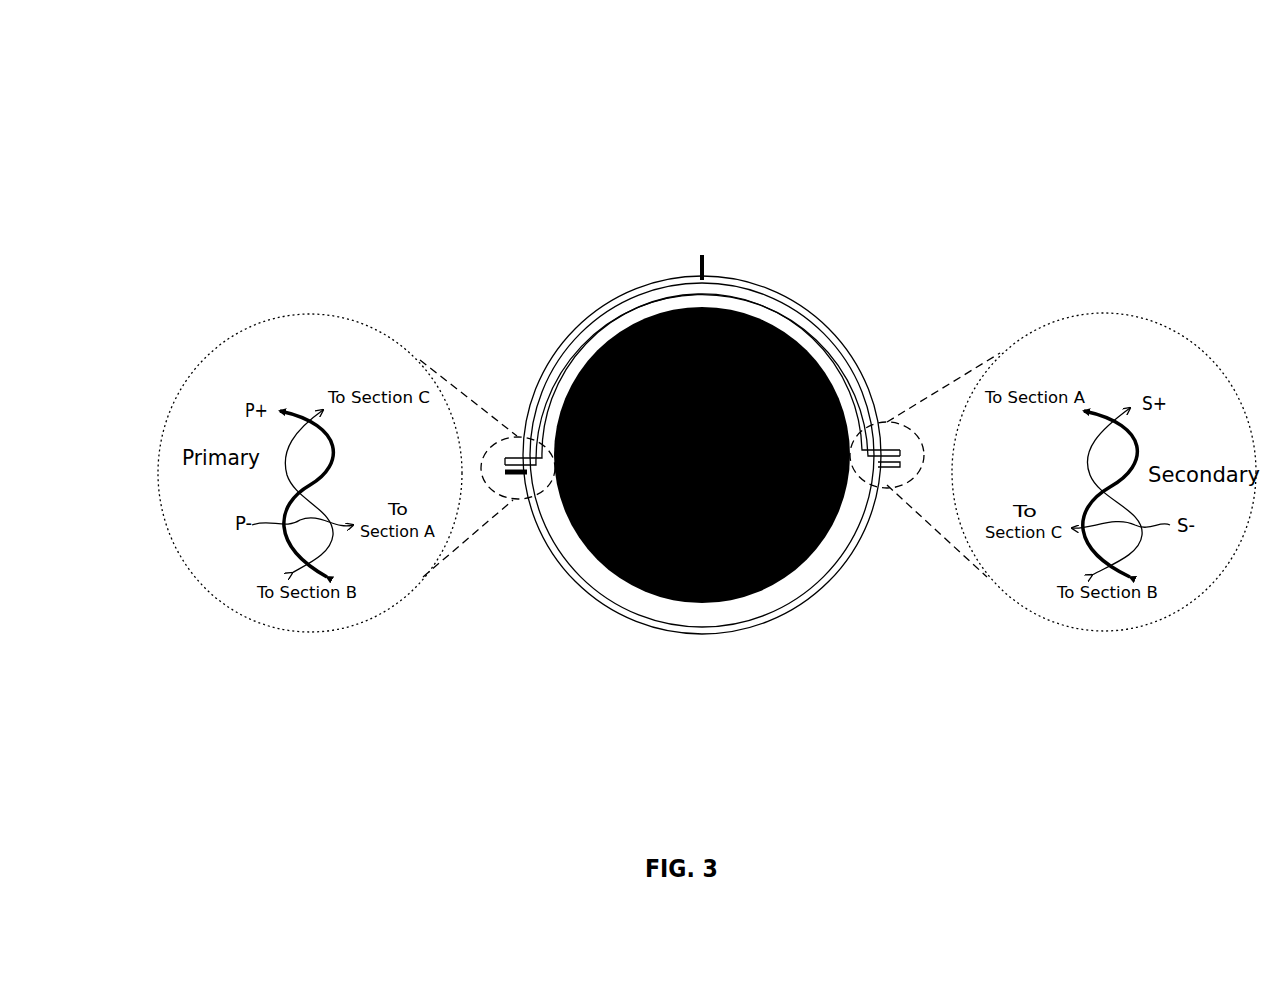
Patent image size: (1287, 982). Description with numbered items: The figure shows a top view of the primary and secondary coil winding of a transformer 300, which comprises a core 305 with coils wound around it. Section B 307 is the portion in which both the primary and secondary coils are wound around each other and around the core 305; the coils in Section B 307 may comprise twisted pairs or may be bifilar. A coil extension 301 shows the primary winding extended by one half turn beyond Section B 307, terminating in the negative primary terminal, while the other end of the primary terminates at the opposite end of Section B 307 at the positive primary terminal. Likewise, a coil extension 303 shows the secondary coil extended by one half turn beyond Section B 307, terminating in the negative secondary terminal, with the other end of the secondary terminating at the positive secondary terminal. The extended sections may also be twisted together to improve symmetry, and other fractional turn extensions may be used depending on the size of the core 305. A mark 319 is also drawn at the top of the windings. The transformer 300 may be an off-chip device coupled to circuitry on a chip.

The transformer 300 is at (221, 90).
The coil extension 301 is at (597, 321).
The coil extension 303 is at (788, 305).
The core 305 is at (722, 468).
The Section B 307 is at (765, 623).
The reference mark 319 is at (706, 262).